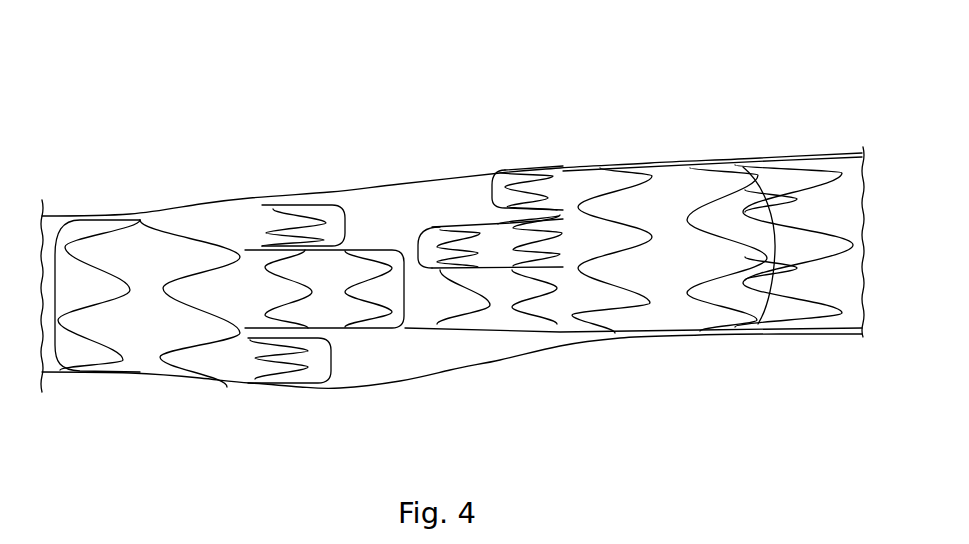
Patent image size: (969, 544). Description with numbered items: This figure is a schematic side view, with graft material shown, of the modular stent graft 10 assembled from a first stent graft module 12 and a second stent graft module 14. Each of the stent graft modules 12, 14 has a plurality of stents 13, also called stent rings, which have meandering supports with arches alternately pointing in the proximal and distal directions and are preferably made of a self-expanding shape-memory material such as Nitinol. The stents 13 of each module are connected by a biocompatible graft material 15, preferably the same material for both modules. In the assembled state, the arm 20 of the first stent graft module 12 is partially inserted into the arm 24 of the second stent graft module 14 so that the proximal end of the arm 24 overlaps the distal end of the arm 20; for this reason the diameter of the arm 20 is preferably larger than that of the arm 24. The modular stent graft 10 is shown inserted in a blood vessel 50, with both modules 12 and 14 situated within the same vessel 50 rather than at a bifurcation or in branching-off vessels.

The modular stent graft 10 is at (503, 112).
The first stent graft module 12 is at (672, 133).
The stent 13 is at (203, 343).
The second stent graft module 14 is at (240, 160).
The graft material 15 is at (113, 323).
The arm 20 is at (420, 305).
The arm 24 is at (385, 290).
The blood vessel 50 is at (353, 193).